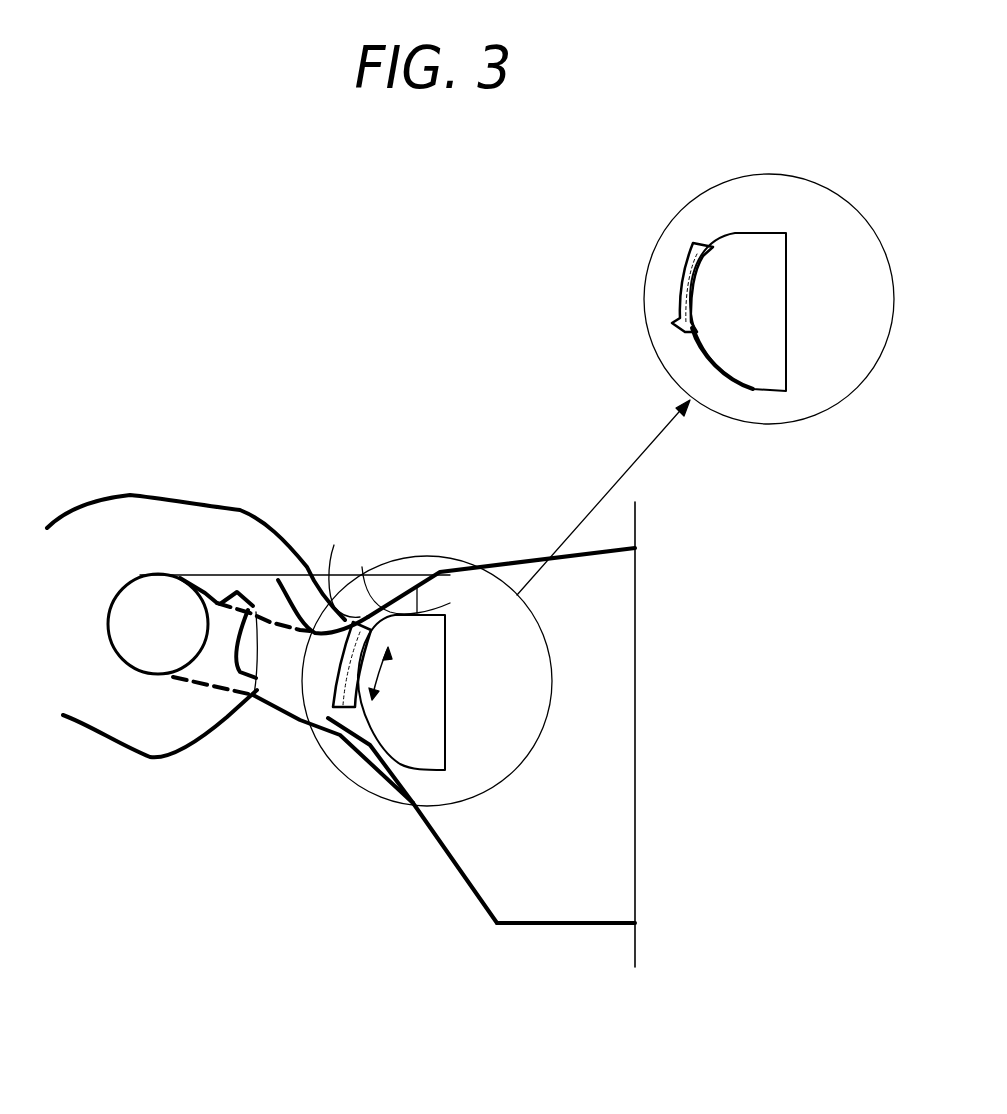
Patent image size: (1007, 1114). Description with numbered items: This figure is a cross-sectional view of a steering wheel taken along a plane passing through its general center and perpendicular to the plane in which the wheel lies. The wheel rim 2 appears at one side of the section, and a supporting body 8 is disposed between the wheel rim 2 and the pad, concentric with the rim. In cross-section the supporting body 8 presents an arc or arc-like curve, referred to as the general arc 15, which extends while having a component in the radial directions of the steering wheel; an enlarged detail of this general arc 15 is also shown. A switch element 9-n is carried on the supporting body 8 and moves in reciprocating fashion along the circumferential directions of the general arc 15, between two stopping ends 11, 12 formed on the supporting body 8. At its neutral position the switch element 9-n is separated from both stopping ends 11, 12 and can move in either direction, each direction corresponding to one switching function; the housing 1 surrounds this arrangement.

The housing 1 is at (541, 819).
The wheel rim 2 is at (157, 650).
The supporting body 8 is at (397, 743).
The switch element 9-n is at (446, 615).
The stopping end 11 is at (362, 567).
The stopping end 12 is at (330, 722).
The general arc 15 is at (337, 670).